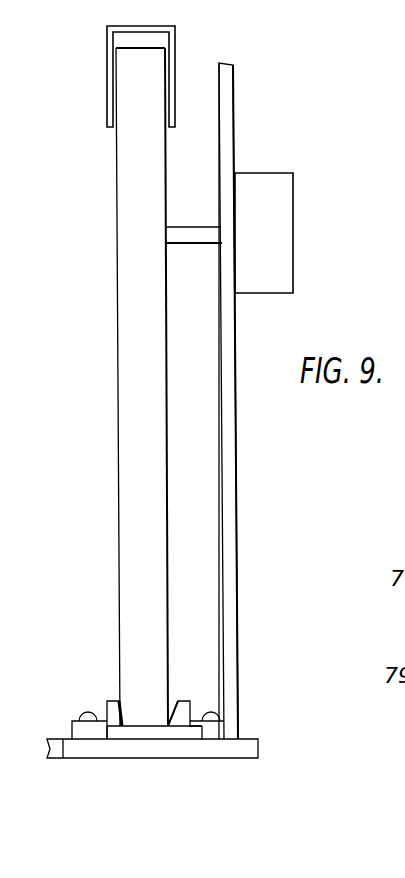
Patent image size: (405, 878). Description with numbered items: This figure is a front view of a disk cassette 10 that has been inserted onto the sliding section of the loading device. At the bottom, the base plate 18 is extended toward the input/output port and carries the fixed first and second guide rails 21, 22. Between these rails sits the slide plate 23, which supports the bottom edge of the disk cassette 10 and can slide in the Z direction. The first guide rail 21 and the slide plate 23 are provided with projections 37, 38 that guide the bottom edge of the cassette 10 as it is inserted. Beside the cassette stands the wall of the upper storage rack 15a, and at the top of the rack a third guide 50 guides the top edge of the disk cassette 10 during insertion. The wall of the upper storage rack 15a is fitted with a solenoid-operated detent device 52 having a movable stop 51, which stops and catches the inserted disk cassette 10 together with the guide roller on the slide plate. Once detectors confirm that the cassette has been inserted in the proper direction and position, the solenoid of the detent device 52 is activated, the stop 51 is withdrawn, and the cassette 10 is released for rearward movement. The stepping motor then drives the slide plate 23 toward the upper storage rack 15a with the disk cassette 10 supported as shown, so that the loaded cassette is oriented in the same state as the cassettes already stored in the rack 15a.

The disk cassette 10 is at (118, 392).
The third guide 50 is at (174, 42).
The upper storage rack 15a is at (299, 431).
The movable stop 51 is at (210, 227).
The solenoid-operated detent device 52 is at (283, 173).
The base plate 18 is at (251, 748).
The slide plate 23 is at (176, 735).
The first guide rail 21 is at (72, 728).
The projection 37 is at (108, 700).
The projection 38 is at (184, 700).
The second guide rail 22 is at (223, 731).